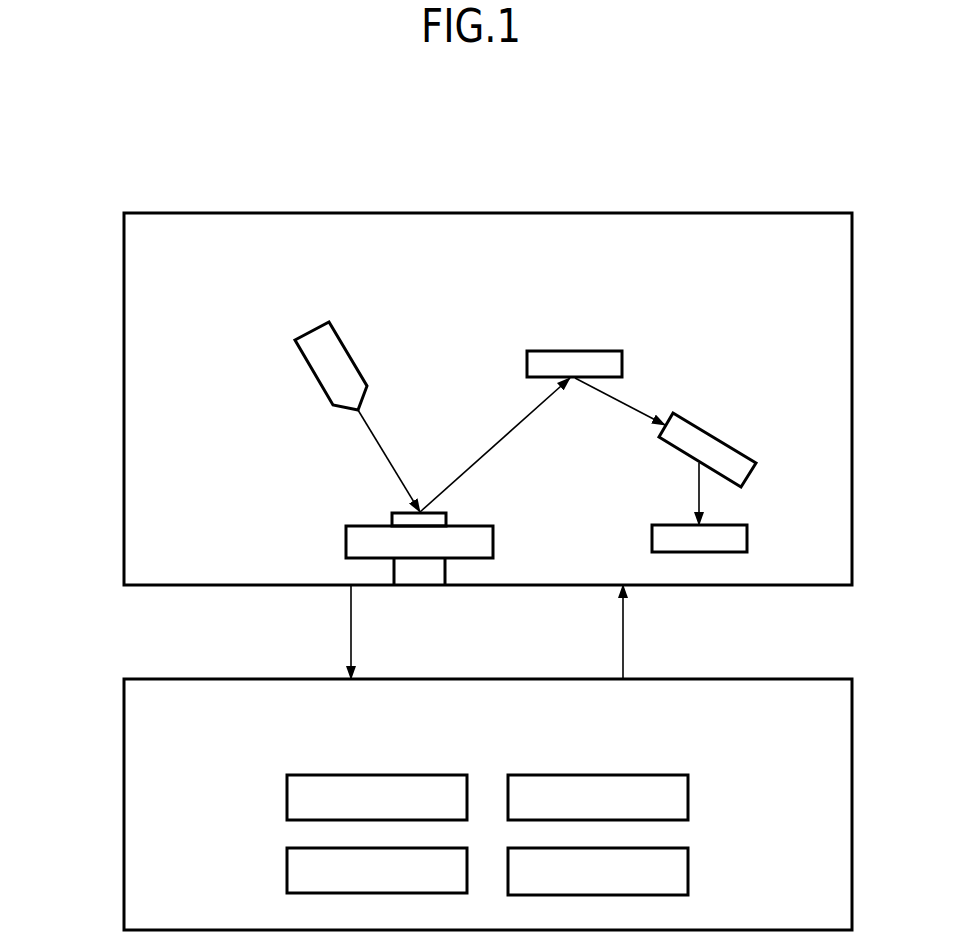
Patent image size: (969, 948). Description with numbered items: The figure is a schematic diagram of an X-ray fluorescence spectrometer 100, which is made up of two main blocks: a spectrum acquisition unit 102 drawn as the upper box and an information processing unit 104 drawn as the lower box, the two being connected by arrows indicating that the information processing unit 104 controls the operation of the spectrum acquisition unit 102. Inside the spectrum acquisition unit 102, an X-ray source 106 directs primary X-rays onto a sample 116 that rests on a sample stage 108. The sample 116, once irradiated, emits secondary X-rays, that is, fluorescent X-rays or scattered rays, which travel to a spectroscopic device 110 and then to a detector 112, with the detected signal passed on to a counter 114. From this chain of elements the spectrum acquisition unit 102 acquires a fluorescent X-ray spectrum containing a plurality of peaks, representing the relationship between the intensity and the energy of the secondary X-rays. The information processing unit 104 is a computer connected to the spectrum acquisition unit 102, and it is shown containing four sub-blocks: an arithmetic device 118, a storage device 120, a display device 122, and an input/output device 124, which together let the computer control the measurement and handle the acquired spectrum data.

The X-ray fluorescence spectrometer 100 is at (489, 186).
The spectrum acquisition unit 102 is at (124, 250).
The information processing unit 104 is at (124, 715).
The X-ray source 106 is at (345, 342).
The sample stage 108 is at (346, 540).
The spectroscopic device 110 is at (573, 349).
The detector 112 is at (713, 435).
The counter 114 is at (747, 537).
The sample 116 is at (400, 512).
The arithmetic device 118 is at (287, 797).
The storage device 120 is at (287, 870).
The display device 122 is at (688, 795).
The input/output device 124 is at (688, 868).